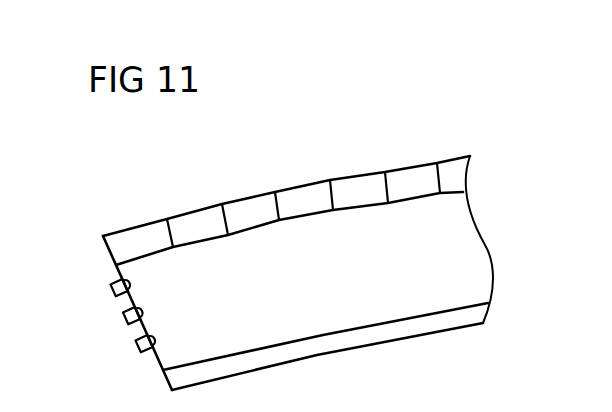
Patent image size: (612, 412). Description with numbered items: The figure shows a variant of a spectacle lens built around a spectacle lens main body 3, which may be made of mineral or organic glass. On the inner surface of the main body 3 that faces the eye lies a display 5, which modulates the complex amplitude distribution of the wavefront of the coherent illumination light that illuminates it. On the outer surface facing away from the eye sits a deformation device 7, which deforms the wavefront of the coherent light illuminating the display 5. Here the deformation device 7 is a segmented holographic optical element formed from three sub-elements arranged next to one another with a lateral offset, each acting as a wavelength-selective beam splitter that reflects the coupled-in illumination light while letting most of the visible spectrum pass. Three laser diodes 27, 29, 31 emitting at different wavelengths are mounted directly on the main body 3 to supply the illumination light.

The spectacle lens main body 3 is at (470, 248).
The display 5 is at (347, 340).
The deformation device 7 is at (372, 178).
The laser diode 27 is at (110, 292).
The laser diode 29 is at (125, 320).
The laser diode 31 is at (133, 345).